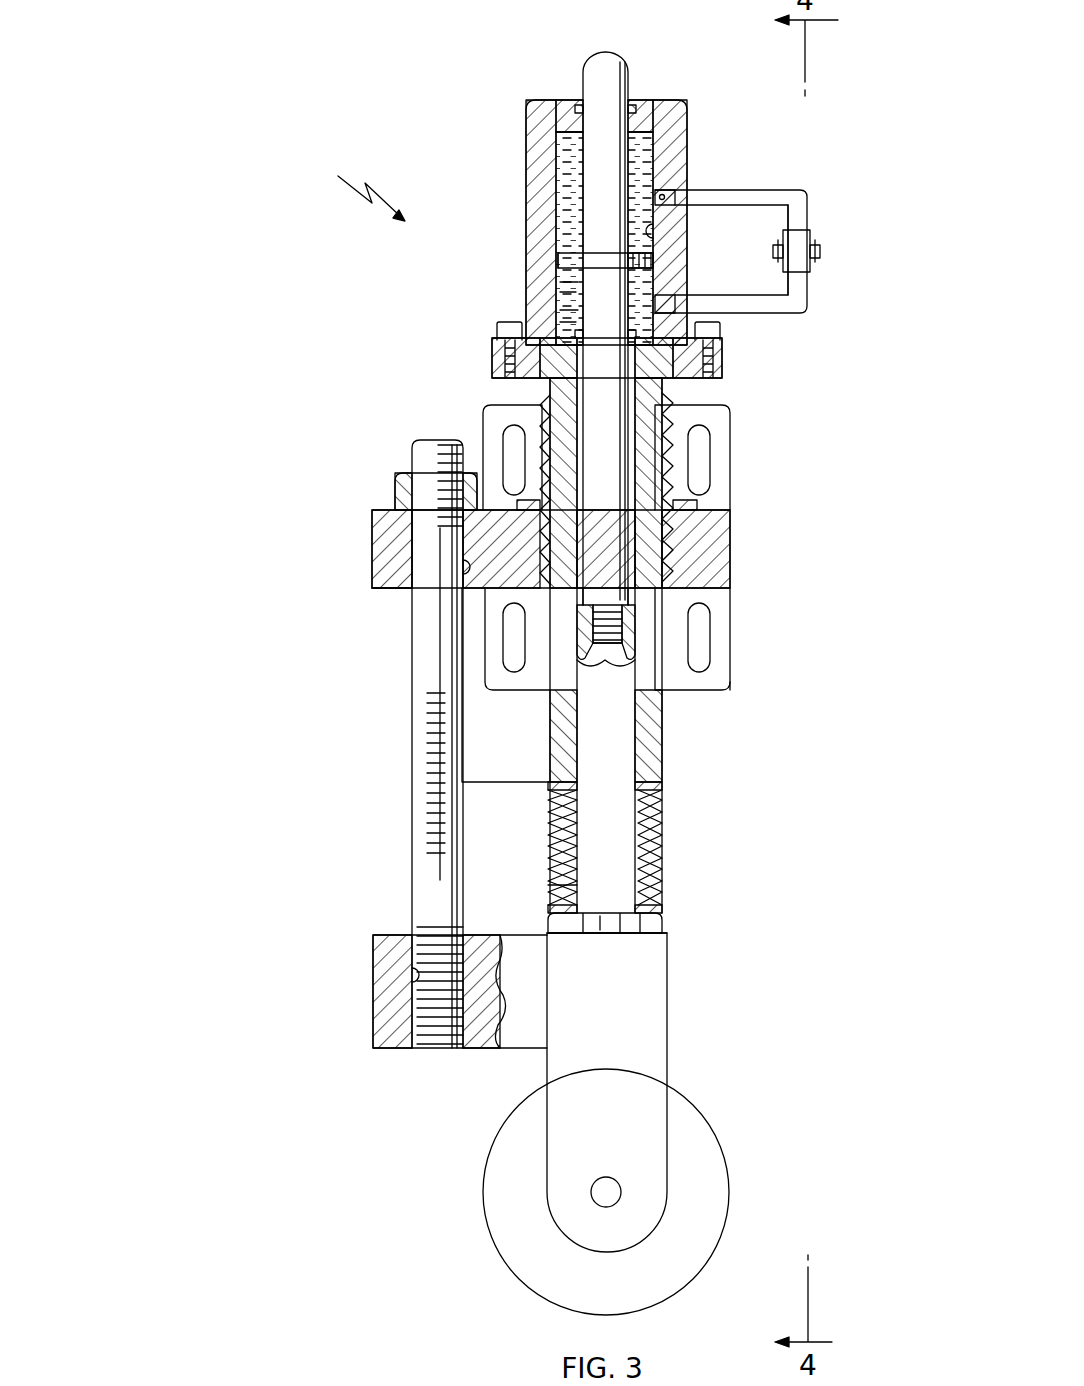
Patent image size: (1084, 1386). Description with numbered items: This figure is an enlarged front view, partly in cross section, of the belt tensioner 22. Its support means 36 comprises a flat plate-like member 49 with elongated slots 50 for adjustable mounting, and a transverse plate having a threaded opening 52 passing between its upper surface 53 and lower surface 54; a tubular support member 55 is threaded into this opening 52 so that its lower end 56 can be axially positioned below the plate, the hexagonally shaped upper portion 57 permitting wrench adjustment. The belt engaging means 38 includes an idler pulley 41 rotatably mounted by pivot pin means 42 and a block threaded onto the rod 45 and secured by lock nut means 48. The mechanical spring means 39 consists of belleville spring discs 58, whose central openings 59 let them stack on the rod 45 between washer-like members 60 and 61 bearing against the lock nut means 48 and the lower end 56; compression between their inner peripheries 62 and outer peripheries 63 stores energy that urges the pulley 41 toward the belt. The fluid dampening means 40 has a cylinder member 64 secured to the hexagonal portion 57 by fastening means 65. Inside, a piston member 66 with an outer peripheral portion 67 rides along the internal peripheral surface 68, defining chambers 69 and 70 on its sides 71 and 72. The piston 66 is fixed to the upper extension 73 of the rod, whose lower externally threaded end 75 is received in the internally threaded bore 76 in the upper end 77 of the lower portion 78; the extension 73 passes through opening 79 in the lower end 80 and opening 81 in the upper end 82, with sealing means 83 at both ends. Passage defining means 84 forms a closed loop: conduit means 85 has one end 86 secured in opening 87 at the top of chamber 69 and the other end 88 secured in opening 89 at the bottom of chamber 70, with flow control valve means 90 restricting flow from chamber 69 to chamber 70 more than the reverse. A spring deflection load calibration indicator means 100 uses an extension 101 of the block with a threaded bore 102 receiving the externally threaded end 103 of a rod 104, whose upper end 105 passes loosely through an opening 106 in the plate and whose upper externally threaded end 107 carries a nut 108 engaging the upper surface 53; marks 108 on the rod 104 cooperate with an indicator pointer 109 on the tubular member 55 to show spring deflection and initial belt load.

The belt tensioner 22 is at (351, 187).
The support means 36 is at (732, 490).
The belt engaging means 38 is at (690, 935).
The mechanical spring means 39 is at (664, 828).
The fluid dampening means 40 is at (530, 165).
The idler pulley 41 is at (712, 1192).
The pivot pin means 42 is at (591, 1192).
The rod 45 is at (620, 752).
The lock nut means 48 is at (665, 920).
The plate-like member 49 is at (712, 680).
The elongated slots 50 is at (505, 440).
The threaded opening 52 is at (735, 535).
The upper surface 53 is at (385, 512).
The lower surface 54 is at (395, 590).
The tubular support member 55 is at (690, 402).
The lower end 56 is at (650, 775).
The hexagonally shaped upper portion 57 is at (722, 362).
The spring discs 58 is at (555, 885).
The central openings 59 is at (555, 830).
The washer-like member 60 is at (552, 908).
The washer-like member 61 is at (665, 790).
The inner peripheries 62 is at (615, 900).
The outer peripheries 63 is at (605, 935).
The cylinder member 64 is at (526, 186).
The fastening means 65 is at (510, 328).
The piston member 66 is at (566, 260).
The outer peripheral portion 67 is at (653, 260).
The internal peripheral surface 68 is at (655, 231).
The chamber 69 is at (650, 165).
The chamber 70 is at (570, 304).
The side 71 is at (572, 253).
The side 72 is at (570, 278).
The upper extension 73 is at (625, 583).
The lower externally threaded end 75 is at (620, 622).
The internally threaded bore 76 is at (622, 655).
The upper end 77 is at (635, 655).
The lower portion 78 is at (590, 735).
The opening 79 is at (535, 388).
The lower end 80 is at (520, 352).
The opening 81 is at (628, 85).
The upper end 82 is at (630, 100).
The sealing means 83 is at (640, 112).
The passage defining means 84 is at (807, 190).
The conduit means 85 is at (760, 190).
The end 86 is at (672, 190).
The opening 87 is at (660, 197).
The end 88 is at (680, 300).
The opening 89 is at (640, 300).
The flow control valve means 90 is at (810, 250).
The spring deflection load calibration indicator means 100 is at (406, 798).
The extension 101 is at (382, 1018).
The threaded bore 102 is at (420, 975).
The externally threaded end 103 is at (433, 1030).
The rod 104 is at (412, 726).
The upper end 105 is at (425, 555).
The opening 106 is at (420, 573).
The upper externally threaded end 107 is at (440, 452).
The nut 108 is at (400, 482).
The indicator pointer 109 is at (475, 780).